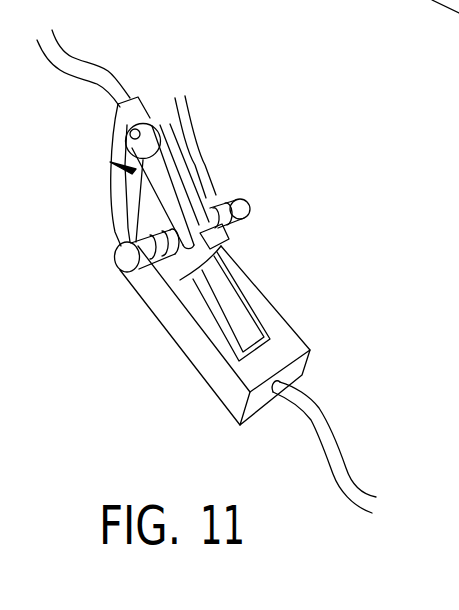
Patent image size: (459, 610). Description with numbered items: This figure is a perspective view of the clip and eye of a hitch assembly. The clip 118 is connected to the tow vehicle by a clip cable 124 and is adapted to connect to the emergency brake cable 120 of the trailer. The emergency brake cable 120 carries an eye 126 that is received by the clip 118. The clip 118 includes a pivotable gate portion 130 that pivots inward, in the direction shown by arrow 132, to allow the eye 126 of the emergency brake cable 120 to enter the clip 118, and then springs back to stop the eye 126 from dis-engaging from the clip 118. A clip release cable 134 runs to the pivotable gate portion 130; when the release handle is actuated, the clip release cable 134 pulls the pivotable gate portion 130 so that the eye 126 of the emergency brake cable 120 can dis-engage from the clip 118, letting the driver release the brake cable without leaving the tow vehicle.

The clip 118 is at (109, 202).
The emergency brake cable 120 is at (342, 488).
The clip cable 124 is at (55, 50).
The eye 126 is at (260, 308).
The pivotable gate portion 130 is at (183, 191).
The arrow 132 is at (165, 158).
The clip release cable 134 is at (185, 117).